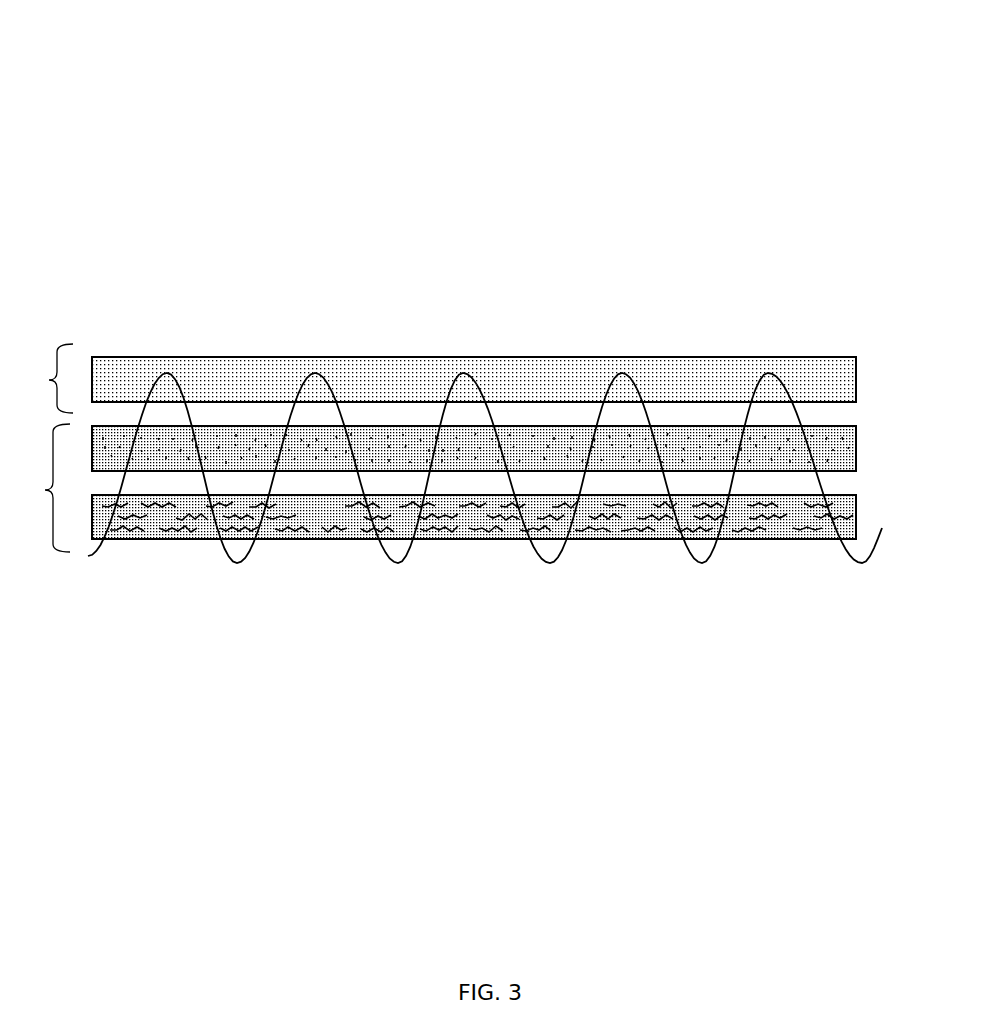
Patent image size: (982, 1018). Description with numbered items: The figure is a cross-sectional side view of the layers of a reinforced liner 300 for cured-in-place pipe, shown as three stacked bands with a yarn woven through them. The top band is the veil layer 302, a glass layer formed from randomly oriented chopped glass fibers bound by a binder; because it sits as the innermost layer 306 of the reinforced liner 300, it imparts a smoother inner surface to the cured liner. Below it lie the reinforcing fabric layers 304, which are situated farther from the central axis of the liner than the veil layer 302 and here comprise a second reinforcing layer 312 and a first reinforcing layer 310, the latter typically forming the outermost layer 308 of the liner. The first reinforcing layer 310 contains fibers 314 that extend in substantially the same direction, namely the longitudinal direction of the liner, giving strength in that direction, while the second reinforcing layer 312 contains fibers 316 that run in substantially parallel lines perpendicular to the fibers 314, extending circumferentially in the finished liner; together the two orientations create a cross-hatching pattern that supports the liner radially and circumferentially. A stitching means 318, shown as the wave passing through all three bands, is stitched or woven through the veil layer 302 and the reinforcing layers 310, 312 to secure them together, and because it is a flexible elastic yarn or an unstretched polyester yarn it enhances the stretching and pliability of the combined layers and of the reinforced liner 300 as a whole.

The reinforced liner 300 is at (86, 56).
The veil layer 302 is at (49, 380).
The reinforcing fabric layers 304 is at (45, 490).
The innermost layer 306 is at (700, 357).
The outermost layer 308 is at (583, 539).
The first reinforcing layer 310 is at (329, 525).
The second reinforcing layer 312 is at (563, 458).
The fibers 314 is at (462, 518).
The fibers 316 is at (585, 438).
The stitching means 318 is at (123, 545).